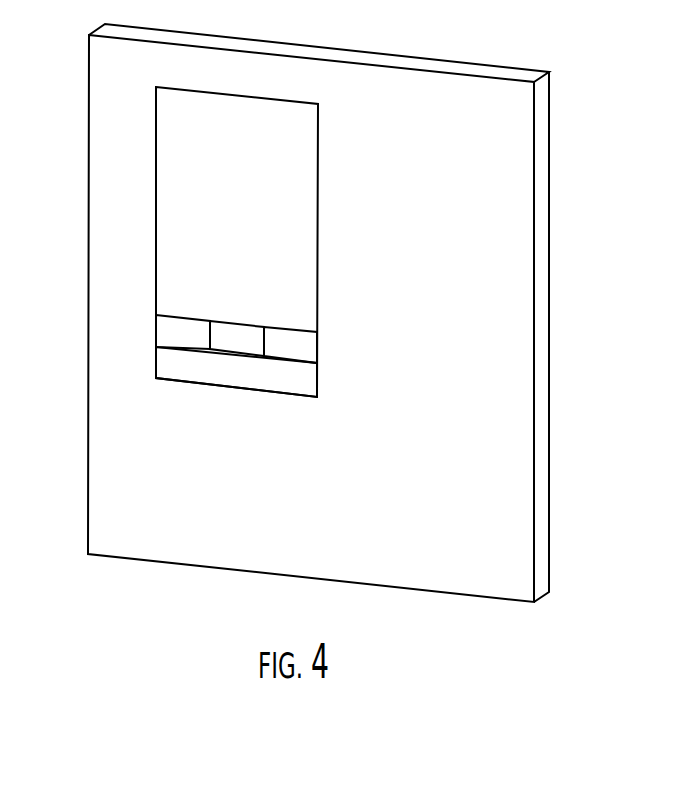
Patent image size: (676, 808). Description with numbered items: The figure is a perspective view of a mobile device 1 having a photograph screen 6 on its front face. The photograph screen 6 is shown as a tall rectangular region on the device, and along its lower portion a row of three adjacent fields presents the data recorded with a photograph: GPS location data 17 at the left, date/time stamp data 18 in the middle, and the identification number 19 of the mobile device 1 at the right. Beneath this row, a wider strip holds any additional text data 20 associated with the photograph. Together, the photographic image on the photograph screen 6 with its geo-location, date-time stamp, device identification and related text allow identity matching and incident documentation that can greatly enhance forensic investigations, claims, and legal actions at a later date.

The mobile device 1 is at (470, 97).
The photograph screen 6 is at (180, 226).
The GPS location data 17 is at (167, 335).
The date/time stamp data 18 is at (233, 341).
The identification number 19 is at (292, 347).
The additional text data 20 is at (287, 377).